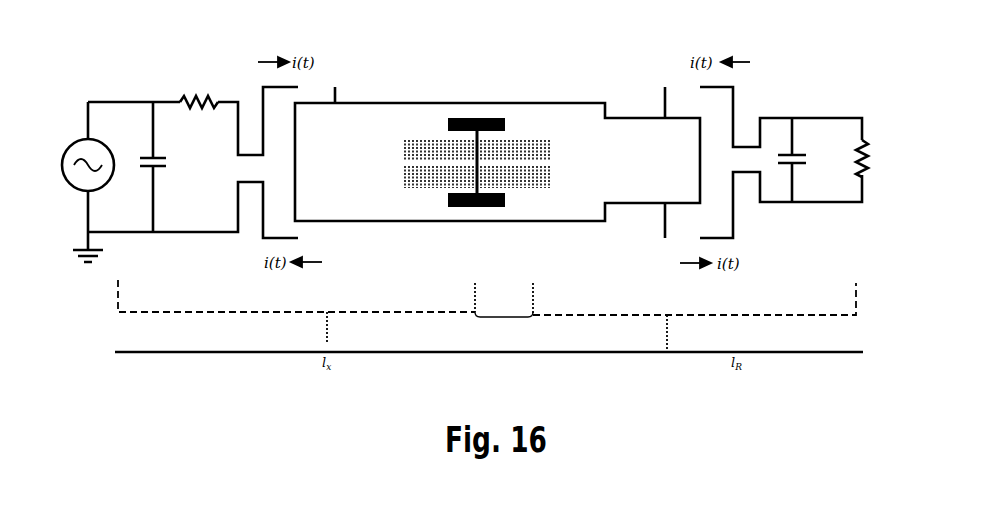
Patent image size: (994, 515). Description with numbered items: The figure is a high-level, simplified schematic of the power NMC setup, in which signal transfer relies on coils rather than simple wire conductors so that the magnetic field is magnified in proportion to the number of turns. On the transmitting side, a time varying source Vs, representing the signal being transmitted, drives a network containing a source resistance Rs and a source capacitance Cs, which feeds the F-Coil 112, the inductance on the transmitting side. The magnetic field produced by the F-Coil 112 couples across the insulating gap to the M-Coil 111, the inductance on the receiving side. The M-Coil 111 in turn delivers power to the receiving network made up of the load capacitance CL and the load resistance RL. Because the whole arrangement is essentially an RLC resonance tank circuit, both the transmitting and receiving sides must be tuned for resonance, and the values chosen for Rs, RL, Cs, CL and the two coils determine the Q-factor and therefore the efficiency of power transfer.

The M-Coil 111 is at (518, 131).
The F-Coil 112 is at (414, 130).
The time varying source Vs is at (70, 165).
The source resistance Rs is at (199, 87).
The source capacitance Cs is at (168, 167).
The load capacitance CL is at (808, 160).
The load resistance RL is at (876, 158).